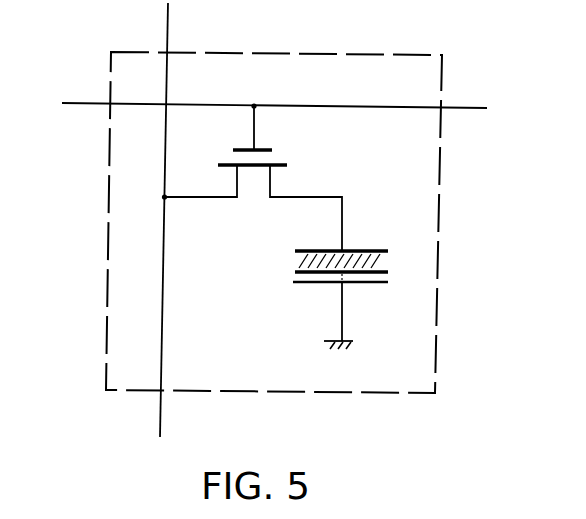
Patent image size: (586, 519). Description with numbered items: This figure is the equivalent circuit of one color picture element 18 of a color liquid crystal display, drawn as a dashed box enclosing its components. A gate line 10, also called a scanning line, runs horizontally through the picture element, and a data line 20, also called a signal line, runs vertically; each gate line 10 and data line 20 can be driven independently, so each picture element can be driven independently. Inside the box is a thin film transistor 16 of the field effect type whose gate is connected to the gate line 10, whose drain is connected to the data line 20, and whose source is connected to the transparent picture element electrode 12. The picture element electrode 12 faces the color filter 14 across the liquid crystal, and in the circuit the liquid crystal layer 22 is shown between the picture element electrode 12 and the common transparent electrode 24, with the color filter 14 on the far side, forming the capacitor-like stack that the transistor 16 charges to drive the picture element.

The gate line 10 is at (80, 104).
The transparent picture element electrode 12 is at (378, 252).
The color filter 14 is at (374, 285).
The thin film transistor 16 is at (279, 155).
The color picture element 18 is at (388, 55).
The data line 20 is at (168, 36).
The liquid crystal layer 22 is at (383, 262).
The common transparent electrode 24 is at (308, 285).